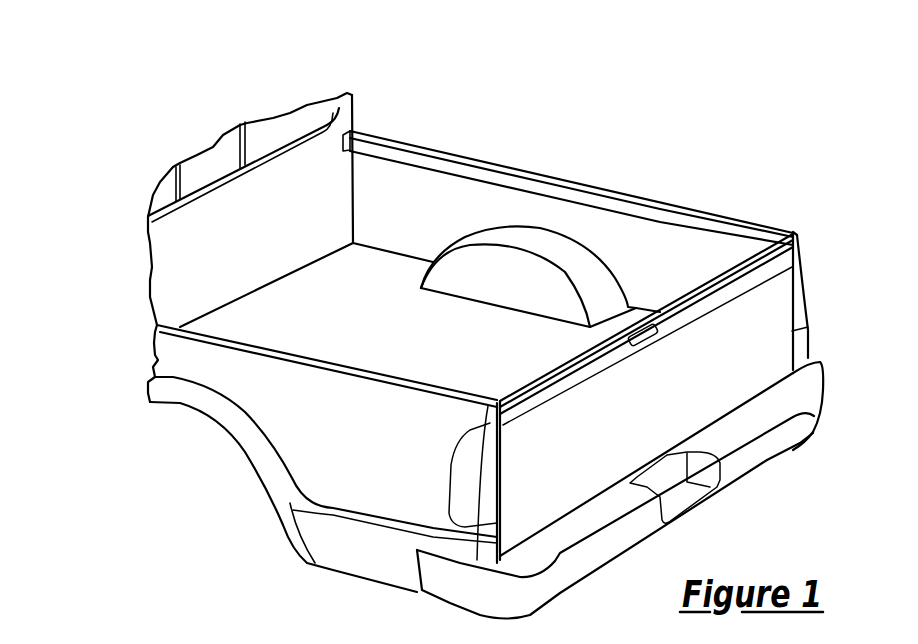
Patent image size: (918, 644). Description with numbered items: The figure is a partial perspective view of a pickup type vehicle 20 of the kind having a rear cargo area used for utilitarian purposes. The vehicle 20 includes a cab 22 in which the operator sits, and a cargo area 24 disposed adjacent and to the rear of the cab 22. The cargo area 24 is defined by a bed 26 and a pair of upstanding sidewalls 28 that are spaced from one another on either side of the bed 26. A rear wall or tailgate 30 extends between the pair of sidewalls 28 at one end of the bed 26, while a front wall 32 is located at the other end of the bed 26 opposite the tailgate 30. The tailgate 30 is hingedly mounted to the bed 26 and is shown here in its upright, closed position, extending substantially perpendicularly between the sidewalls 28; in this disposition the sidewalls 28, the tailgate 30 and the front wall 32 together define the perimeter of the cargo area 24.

The pickup truck vehicle 20 is at (122, 238).
The cab 22 is at (360, 108).
The cargo area 24 is at (568, 176).
The bed 26 is at (339, 311).
The sidewalls 28 is at (615, 189).
The tailgate 30 is at (720, 265).
The front wall 32 is at (291, 203).